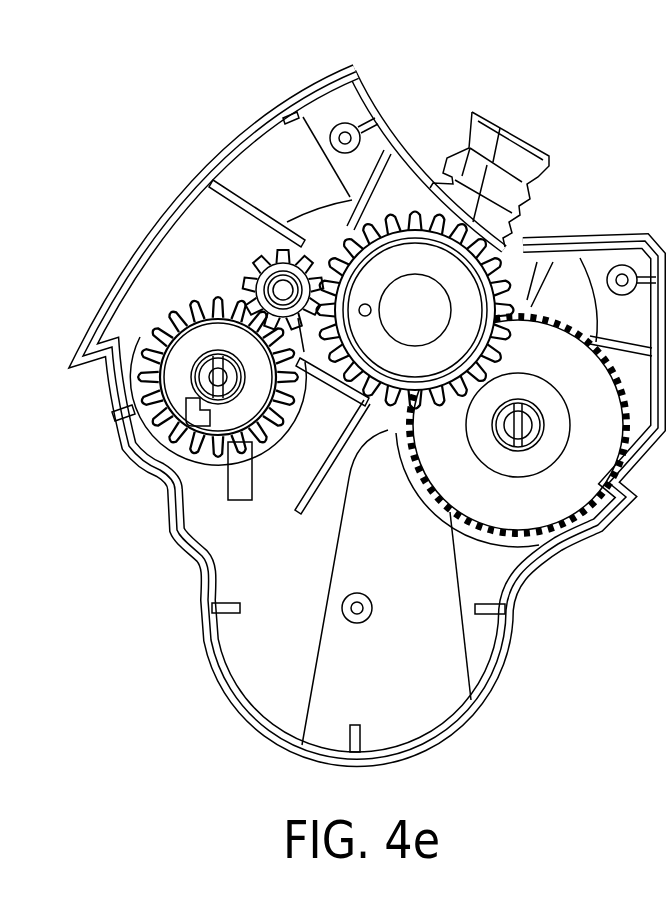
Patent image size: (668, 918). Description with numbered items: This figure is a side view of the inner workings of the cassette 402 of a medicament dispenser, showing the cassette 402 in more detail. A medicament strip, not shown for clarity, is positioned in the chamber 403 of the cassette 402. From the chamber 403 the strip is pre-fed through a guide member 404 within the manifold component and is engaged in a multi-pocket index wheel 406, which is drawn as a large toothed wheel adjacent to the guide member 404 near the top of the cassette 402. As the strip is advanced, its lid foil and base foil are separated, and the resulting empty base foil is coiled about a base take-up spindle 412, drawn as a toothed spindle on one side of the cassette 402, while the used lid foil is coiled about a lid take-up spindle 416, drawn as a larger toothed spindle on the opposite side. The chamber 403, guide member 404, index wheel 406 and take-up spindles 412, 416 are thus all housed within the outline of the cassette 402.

The cassette 402 is at (278, 557).
The chamber 403 is at (285, 659).
The guide member 404 is at (507, 133).
The multi-pocket index wheel 406 is at (427, 305).
The base take-up spindle 412 is at (197, 373).
The lid take-up spindle 416 is at (530, 437).